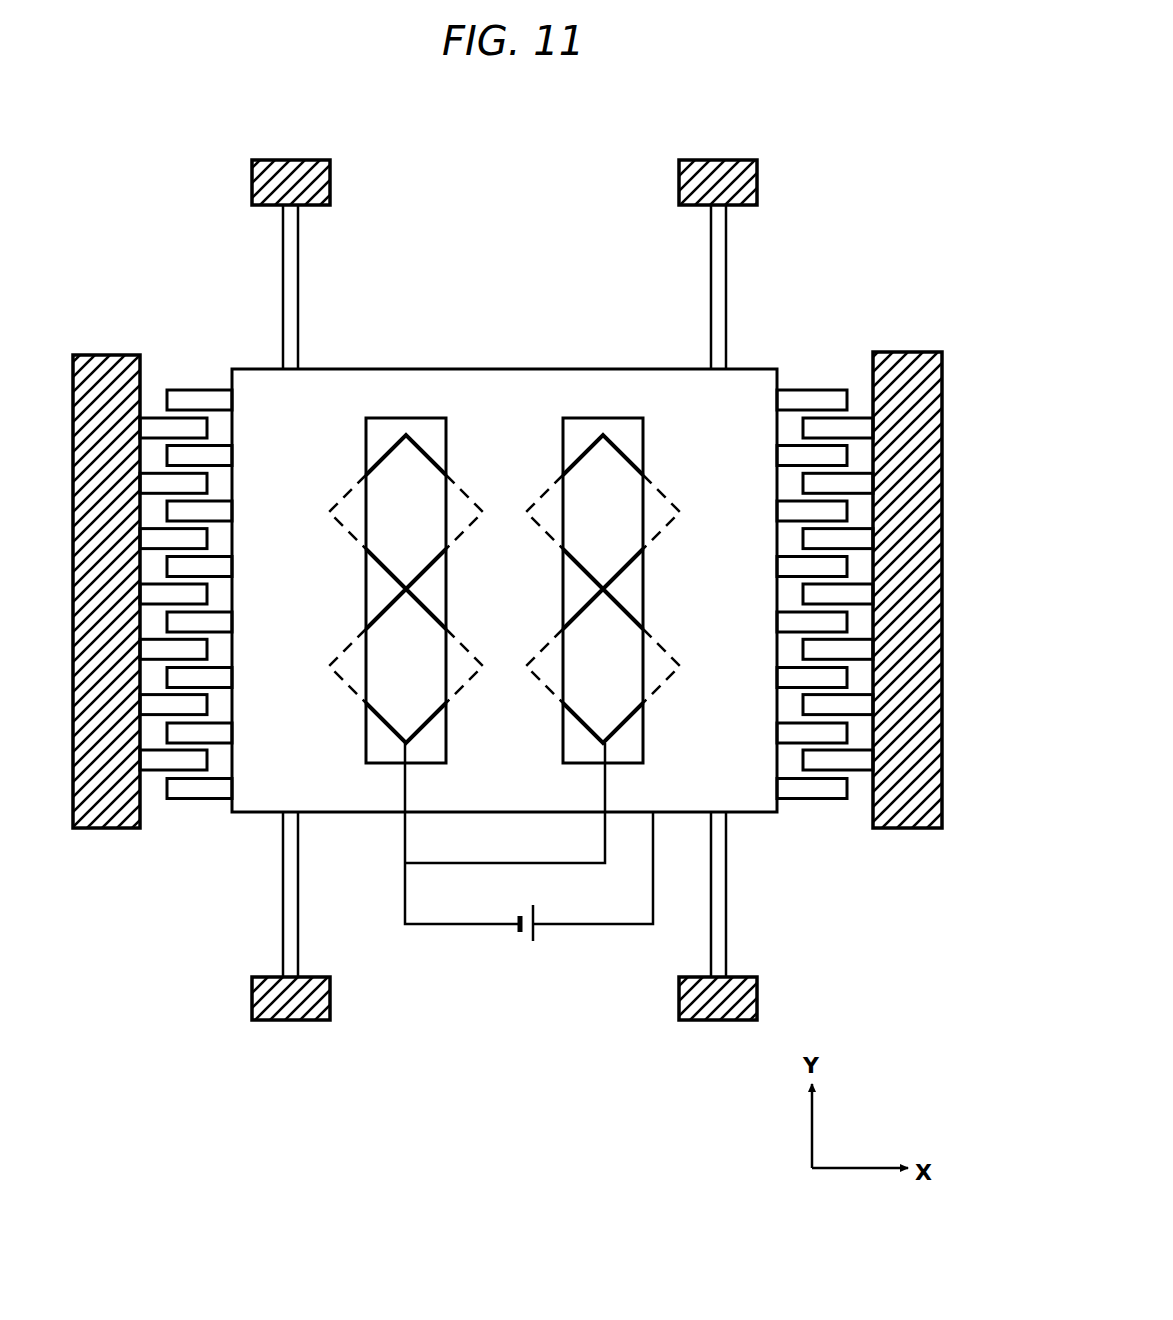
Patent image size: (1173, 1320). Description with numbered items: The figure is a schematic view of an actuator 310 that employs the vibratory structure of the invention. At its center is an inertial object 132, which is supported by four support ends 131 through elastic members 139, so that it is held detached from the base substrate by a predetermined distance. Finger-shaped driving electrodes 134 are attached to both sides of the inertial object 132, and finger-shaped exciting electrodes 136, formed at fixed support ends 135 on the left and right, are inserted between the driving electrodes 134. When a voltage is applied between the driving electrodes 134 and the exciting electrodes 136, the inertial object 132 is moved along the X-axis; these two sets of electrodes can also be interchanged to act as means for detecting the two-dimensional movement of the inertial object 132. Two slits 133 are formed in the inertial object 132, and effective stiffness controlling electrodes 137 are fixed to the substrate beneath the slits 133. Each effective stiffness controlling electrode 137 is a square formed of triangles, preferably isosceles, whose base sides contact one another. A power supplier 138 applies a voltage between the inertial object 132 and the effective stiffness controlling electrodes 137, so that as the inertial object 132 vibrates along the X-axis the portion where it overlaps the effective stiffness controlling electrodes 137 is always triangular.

The actuator 310 is at (817, 180).
The support ends 131 is at (300, 176).
The inertial object 132 is at (507, 398).
The slits 133 is at (432, 438).
The driving electrodes 134 is at (222, 788).
The support ends 135 is at (112, 360).
The exciting electrodes 136 is at (193, 432).
The effective stiffness controlling electrodes 137 is at (395, 648).
The power supplier 138 is at (530, 932).
The elastic members 139 is at (300, 305).